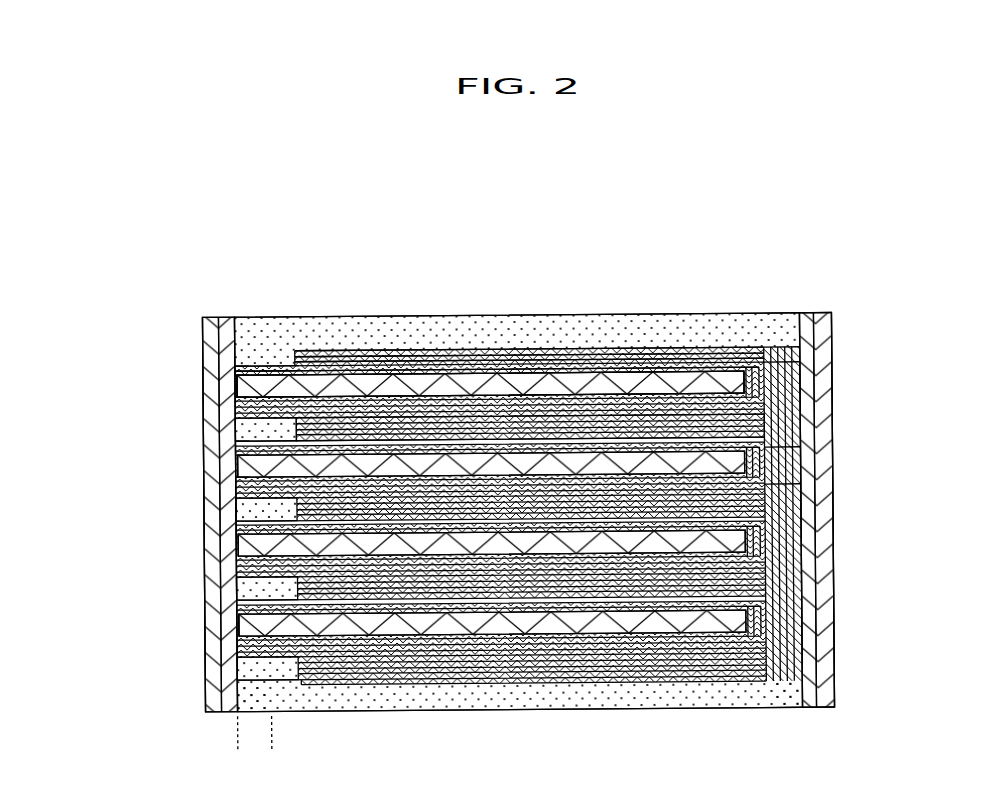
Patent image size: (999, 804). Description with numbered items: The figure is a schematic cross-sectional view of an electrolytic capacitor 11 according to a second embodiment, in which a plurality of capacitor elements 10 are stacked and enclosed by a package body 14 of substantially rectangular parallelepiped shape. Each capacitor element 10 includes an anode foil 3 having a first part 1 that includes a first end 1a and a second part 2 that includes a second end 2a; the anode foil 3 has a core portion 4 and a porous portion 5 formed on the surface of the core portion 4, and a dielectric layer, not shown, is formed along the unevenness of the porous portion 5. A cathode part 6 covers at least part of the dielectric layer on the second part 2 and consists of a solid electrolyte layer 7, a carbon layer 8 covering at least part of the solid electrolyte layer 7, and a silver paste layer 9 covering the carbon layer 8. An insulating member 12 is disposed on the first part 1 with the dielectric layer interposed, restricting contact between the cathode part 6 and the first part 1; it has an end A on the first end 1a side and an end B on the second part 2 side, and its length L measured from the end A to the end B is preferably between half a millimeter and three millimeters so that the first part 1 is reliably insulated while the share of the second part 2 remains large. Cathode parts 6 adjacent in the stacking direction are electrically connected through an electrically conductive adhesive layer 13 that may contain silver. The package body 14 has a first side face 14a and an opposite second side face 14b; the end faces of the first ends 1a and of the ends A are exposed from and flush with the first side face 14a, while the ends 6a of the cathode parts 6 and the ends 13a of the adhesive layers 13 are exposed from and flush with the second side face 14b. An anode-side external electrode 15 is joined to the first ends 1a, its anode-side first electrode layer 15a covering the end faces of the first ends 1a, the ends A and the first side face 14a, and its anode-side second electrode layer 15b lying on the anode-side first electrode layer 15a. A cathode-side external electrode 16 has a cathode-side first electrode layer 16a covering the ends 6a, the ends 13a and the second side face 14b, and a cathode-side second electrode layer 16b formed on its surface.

The electrolytic capacitor 11 is at (784, 188).
The capacitor element 10 is at (740, 340).
The package body 14 is at (705, 332).
The first side face 14a is at (218, 690).
The second side face 14b is at (810, 692).
The anode-side external electrode 15 is at (158, 515).
The anode-side first electrode layer 15a is at (208, 554).
The anode-side second electrode layer 15b is at (208, 616).
The cathode-side external electrode 16 is at (880, 510).
The cathode-side first electrode layer 16a is at (816, 558).
The cathode-side second electrode layer 16b is at (918, 536).
The adhesive layer 13 is at (672, 410).
The end of adhesive layer 13a is at (806, 413).
The second part 2 is at (527, 288).
The second end 2a is at (806, 365).
The cathode part 6 is at (529, 286).
The end of cathode part 6a is at (806, 463).
The solid electrolyte layer 7 is at (512, 352).
The carbon layer 8 is at (555, 356).
The silver paste layer 9 is at (520, 250).
The anode foil 3 is at (496, 304).
The core portion 4 is at (414, 388).
The porous portion 5 is at (436, 362).
The insulating member 12 is at (240, 370).
The first part 1 is at (258, 372).
The first end 1a is at (206, 378).
The end A of insulating member A is at (206, 355).
The end B of insulating member B is at (278, 372).
The length of insulating member L is at (302, 735).